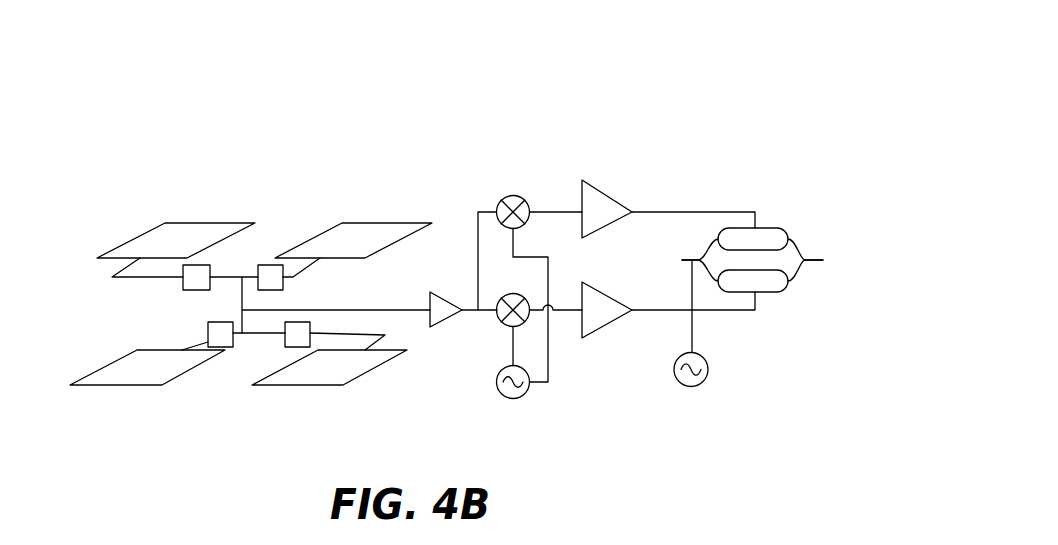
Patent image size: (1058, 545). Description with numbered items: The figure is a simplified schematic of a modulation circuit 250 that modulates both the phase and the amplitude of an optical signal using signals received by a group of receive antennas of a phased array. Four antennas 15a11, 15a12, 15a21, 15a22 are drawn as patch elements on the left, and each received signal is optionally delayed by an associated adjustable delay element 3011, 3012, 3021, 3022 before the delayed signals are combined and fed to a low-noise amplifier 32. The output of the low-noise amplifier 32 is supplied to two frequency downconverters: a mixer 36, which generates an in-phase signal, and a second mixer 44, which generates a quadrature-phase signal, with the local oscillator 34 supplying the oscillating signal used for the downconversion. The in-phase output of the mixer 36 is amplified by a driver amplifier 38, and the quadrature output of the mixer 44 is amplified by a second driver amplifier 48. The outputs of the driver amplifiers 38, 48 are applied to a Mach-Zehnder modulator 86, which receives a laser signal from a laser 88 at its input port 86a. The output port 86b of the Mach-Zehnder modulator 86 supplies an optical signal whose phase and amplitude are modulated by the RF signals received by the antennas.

The antenna 15a11 is at (198, 228).
The antenna element 15a12 is at (367, 230).
The antenna element 15a21 is at (113, 387).
The antenna element 15a22 is at (292, 385).
The phase shifter 3011 is at (183, 283).
The phase shifter 3012 is at (283, 283).
The phase shifter 3021 is at (208, 330).
The phase shifter 3022 is at (283, 340).
The low-noise amplifier 32 is at (437, 328).
The local oscillator 34 is at (510, 398).
The mixer 36 is at (501, 324).
The driver amplifier 38 is at (621, 294).
The second mixer 44 is at (518, 197).
The second driver amplifier 48 is at (618, 200).
The Mach-Zehnder modulator 86 is at (804, 224).
The input port 86a is at (680, 246).
The output port 86b is at (826, 245).
The laser 88 is at (675, 380).
The modulation circuit 250 is at (590, 96).